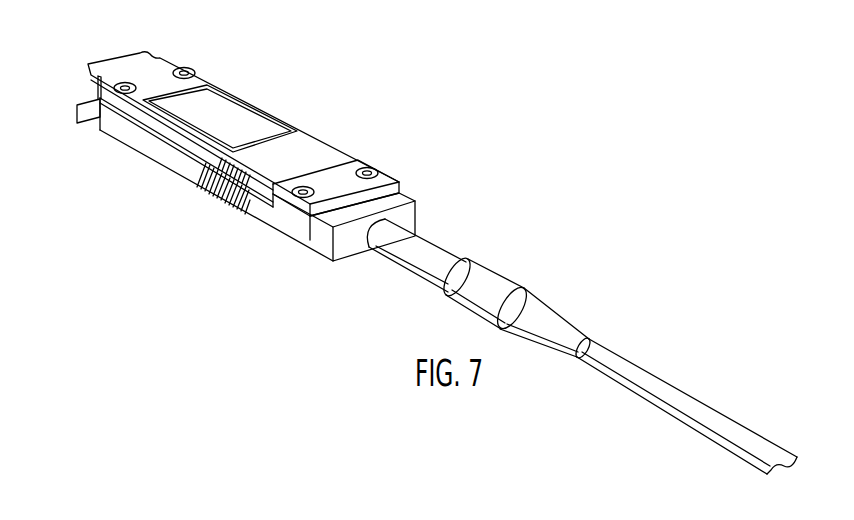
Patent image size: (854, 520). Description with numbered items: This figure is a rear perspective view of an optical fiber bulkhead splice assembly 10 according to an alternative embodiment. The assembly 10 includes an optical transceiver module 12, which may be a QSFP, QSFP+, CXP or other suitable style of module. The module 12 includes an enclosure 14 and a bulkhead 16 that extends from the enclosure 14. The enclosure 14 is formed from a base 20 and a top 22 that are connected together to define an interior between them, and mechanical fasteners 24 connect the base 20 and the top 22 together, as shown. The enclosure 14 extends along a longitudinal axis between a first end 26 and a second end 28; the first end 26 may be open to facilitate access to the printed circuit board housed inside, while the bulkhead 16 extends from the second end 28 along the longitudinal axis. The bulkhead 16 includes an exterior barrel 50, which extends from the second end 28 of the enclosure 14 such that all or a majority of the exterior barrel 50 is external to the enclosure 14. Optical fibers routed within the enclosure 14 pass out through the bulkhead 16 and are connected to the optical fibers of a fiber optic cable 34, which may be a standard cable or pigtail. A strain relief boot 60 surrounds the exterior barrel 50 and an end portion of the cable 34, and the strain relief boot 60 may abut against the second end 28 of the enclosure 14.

The optical fiber bulkhead splice assembly 10 is at (347, 73).
The optical transceiver module 12 is at (455, 171).
The enclosure 14 is at (276, 100).
The bulkhead 16 is at (457, 237).
The base 20 is at (149, 144).
The top 22 is at (153, 78).
The mechanical fasteners 24 is at (185, 71).
The first end 26 is at (75, 80).
The second end 28 is at (356, 246).
The fiber optic cable 34 is at (662, 361).
The exterior barrel 50 is at (428, 258).
The strain relief boot 60 is at (543, 286).